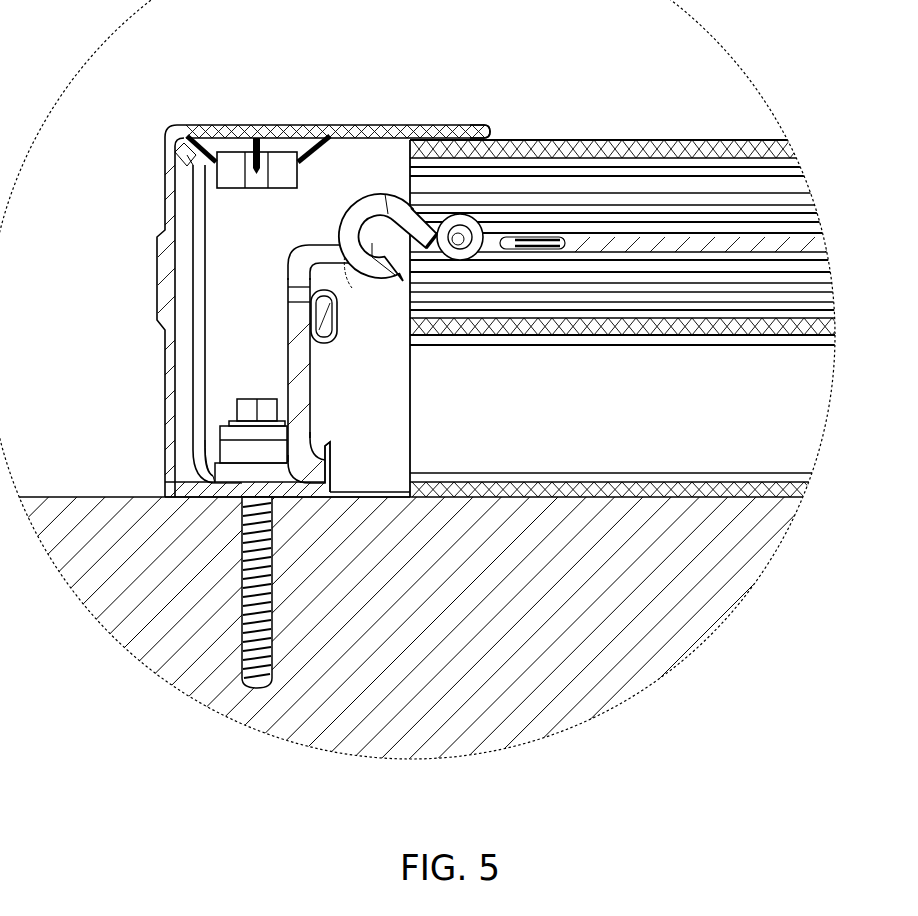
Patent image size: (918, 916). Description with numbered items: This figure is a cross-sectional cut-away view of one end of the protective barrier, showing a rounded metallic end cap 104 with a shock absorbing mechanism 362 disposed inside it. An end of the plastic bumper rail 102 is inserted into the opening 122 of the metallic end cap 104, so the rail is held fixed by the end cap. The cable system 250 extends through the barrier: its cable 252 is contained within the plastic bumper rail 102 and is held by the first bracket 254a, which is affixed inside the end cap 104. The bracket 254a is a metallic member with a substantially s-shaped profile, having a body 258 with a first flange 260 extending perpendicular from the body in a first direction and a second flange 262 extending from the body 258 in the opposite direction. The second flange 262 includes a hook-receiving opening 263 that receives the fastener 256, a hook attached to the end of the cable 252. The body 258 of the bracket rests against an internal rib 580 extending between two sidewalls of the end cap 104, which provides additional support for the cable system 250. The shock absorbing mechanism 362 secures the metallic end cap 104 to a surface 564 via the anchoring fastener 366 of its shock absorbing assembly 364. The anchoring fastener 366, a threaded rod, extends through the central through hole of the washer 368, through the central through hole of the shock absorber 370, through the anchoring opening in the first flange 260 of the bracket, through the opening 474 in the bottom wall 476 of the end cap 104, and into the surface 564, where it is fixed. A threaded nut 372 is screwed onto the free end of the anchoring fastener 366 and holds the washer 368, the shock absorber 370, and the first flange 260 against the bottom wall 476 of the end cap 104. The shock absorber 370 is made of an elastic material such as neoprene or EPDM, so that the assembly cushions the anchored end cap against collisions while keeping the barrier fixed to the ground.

The plastic bumper rail 102 is at (575, 140).
The rounded metallic end cap 104 is at (392, 126).
The opening 122 is at (487, 134).
The cable system 250 is at (350, 175).
The cable 252 is at (693, 247).
The first bracket 254a is at (303, 406).
The fastener 256 is at (391, 192).
The body 258 is at (312, 368).
The first flange 260 is at (233, 478).
The second flange 262 is at (333, 240).
The hook-receiving opening 263 is at (347, 267).
The shock absorbing mechanism 362 is at (252, 350).
The shock absorbing assembly 364 is at (213, 392).
The anchoring fastener 366 is at (270, 618).
The washer 368 is at (232, 431).
The shock absorber 370 is at (230, 451).
The threaded nut 372 is at (245, 408).
The opening 474 is at (243, 503).
The bottom wall 476 is at (262, 497).
The surface 564 is at (660, 641).
The internal rib 580 is at (338, 330).